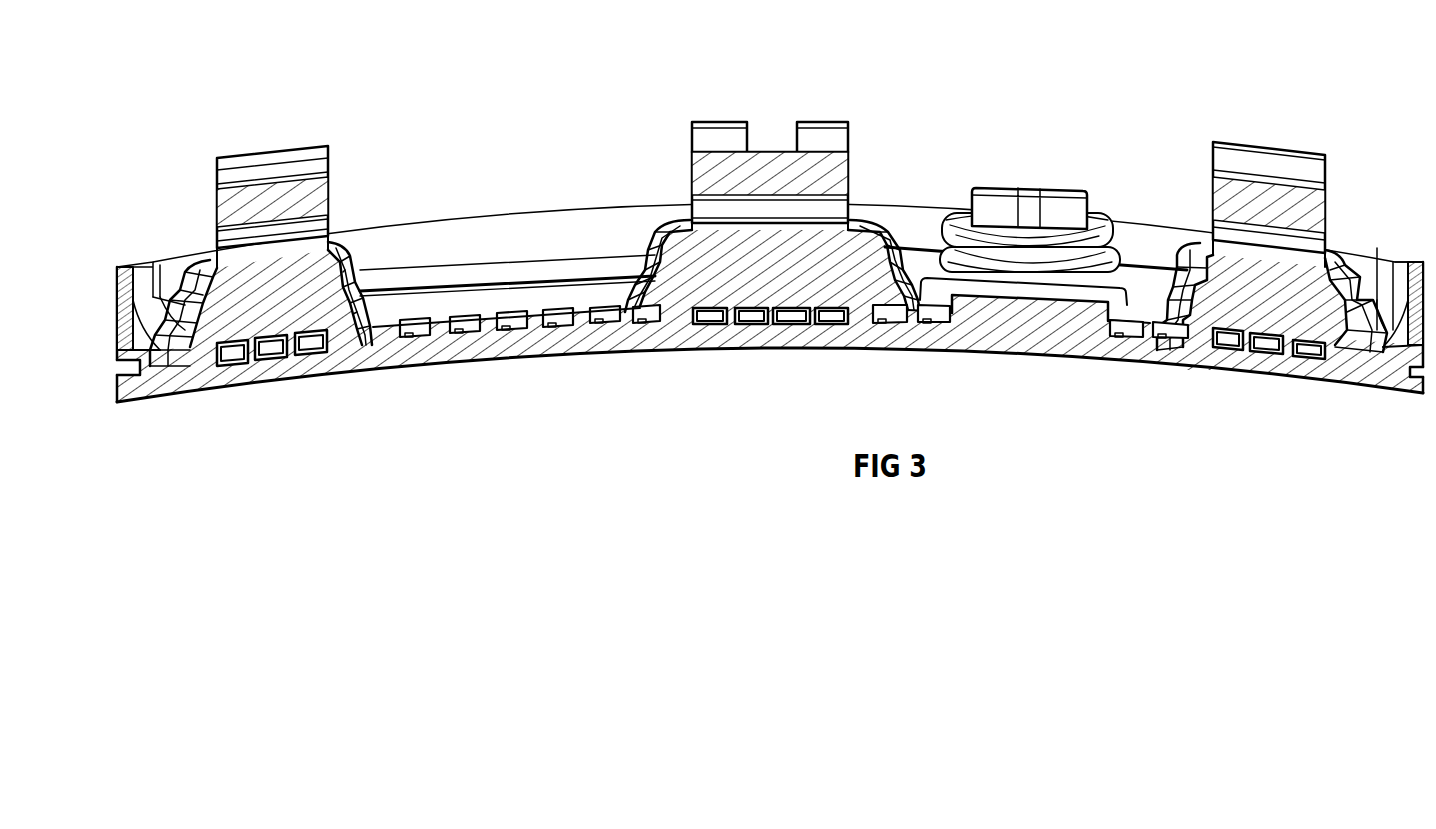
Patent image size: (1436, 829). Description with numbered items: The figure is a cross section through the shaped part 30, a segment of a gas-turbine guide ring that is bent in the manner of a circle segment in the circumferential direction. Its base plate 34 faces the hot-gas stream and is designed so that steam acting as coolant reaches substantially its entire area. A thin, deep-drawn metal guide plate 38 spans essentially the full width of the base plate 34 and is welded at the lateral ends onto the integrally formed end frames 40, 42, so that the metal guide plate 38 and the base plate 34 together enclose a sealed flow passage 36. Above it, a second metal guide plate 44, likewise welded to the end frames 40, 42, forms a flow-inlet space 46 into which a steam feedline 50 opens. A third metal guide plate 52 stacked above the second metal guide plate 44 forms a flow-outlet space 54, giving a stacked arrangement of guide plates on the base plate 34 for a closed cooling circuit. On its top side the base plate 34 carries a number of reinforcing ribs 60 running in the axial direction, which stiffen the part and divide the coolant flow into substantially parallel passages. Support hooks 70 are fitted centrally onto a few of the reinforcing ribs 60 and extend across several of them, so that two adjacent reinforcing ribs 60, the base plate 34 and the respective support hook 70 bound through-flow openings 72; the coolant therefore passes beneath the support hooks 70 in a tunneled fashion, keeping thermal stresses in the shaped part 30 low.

The shaped part 30 is at (157, 262).
The base plate 34 is at (138, 402).
The flow passage 36 is at (353, 347).
The metal guide plate 38 is at (648, 335).
The end frame 40 is at (123, 357).
The end frame 42 is at (1405, 397).
The second metal guide plate 44 is at (532, 337).
The flow-inlet space 46 is at (428, 308).
The steam feedline 50 is at (1030, 212).
The third metal guide plate 52 is at (567, 252).
The flow-outlet space 54 is at (902, 262).
The reinforcing ribs 60 is at (812, 340).
The support hooks 70 is at (267, 148).
The through-flow openings 72 is at (1272, 352).